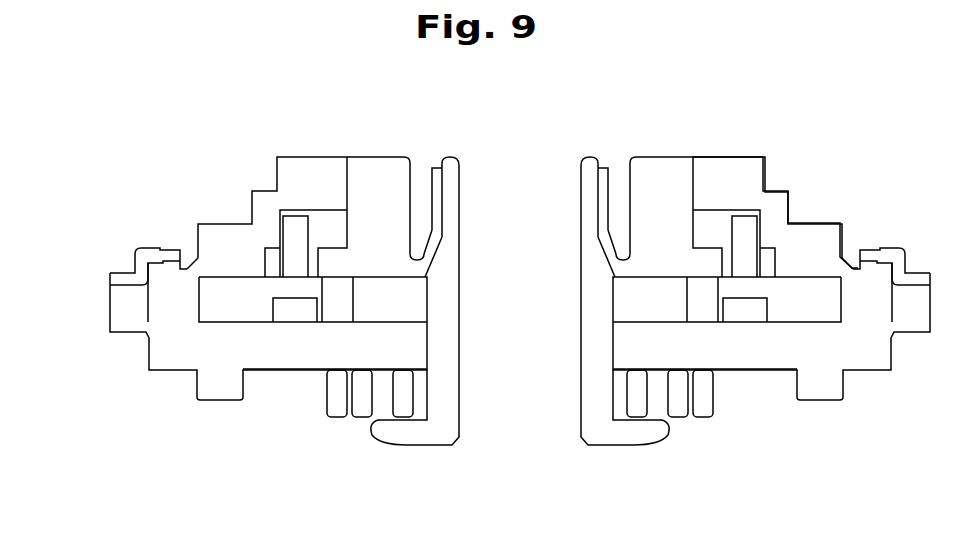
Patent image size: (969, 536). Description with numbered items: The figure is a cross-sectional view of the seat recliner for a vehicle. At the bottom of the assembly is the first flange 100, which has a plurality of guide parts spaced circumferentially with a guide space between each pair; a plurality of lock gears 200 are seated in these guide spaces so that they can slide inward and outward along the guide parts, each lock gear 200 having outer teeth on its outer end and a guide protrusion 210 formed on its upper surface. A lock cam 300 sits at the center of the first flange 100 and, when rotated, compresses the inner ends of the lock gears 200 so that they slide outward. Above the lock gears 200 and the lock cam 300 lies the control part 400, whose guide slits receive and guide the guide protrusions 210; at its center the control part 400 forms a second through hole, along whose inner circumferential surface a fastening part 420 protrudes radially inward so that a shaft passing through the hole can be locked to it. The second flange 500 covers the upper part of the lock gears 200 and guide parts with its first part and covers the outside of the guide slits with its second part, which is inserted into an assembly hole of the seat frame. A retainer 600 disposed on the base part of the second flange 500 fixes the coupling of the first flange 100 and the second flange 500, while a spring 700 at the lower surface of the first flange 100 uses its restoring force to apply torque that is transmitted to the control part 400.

The first flange 100 is at (758, 370).
The lock gear 200 is at (227, 299).
The guide protrusion 210 is at (296, 238).
The lock cam 300 is at (379, 297).
The control part 400 is at (675, 172).
The fastening part 420 is at (604, 172).
The second flange 500 is at (775, 200).
The retainer 600 is at (453, 388).
The spring 700 is at (337, 418).